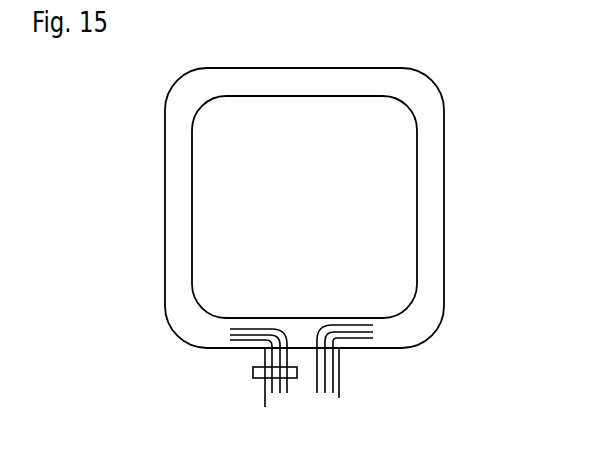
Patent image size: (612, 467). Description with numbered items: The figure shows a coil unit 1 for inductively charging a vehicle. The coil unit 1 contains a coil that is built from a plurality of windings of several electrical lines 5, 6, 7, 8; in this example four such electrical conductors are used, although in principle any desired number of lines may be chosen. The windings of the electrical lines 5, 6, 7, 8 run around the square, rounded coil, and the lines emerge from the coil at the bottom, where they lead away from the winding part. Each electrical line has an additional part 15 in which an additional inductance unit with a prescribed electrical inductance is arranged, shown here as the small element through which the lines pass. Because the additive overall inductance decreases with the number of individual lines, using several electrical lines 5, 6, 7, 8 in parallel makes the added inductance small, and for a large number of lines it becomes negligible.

The coil unit 1 is at (493, 155).
The electrical line 5 is at (338, 347).
The electrical line 6 is at (341, 354).
The electrical line 7 is at (337, 368).
The electrical line 8 is at (339, 388).
The additional part 15 is at (251, 375).